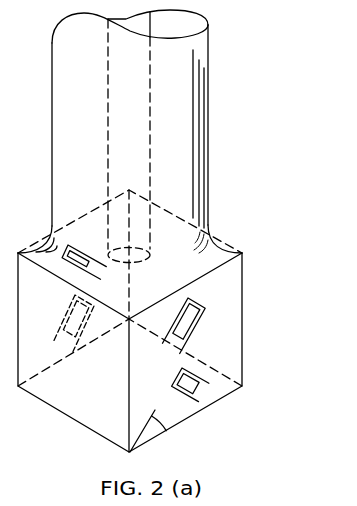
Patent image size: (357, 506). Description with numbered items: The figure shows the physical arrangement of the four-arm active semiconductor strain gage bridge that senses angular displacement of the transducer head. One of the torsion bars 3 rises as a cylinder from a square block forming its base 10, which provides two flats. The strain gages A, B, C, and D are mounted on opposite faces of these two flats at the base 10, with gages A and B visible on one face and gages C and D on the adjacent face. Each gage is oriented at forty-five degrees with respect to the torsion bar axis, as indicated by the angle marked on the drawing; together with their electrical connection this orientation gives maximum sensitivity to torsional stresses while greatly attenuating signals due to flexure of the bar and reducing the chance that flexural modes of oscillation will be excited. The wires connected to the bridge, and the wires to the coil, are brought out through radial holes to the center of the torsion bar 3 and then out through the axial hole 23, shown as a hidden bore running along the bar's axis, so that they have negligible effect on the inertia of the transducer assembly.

The torsion bar 3 is at (208, 115).
The axial hole 23 is at (108, 115).
The base 10 is at (242, 328).
The strain gage A is at (197, 319).
The strain gage B is at (176, 371).
The strain gage C is at (67, 264).
The strain gage D is at (62, 321).